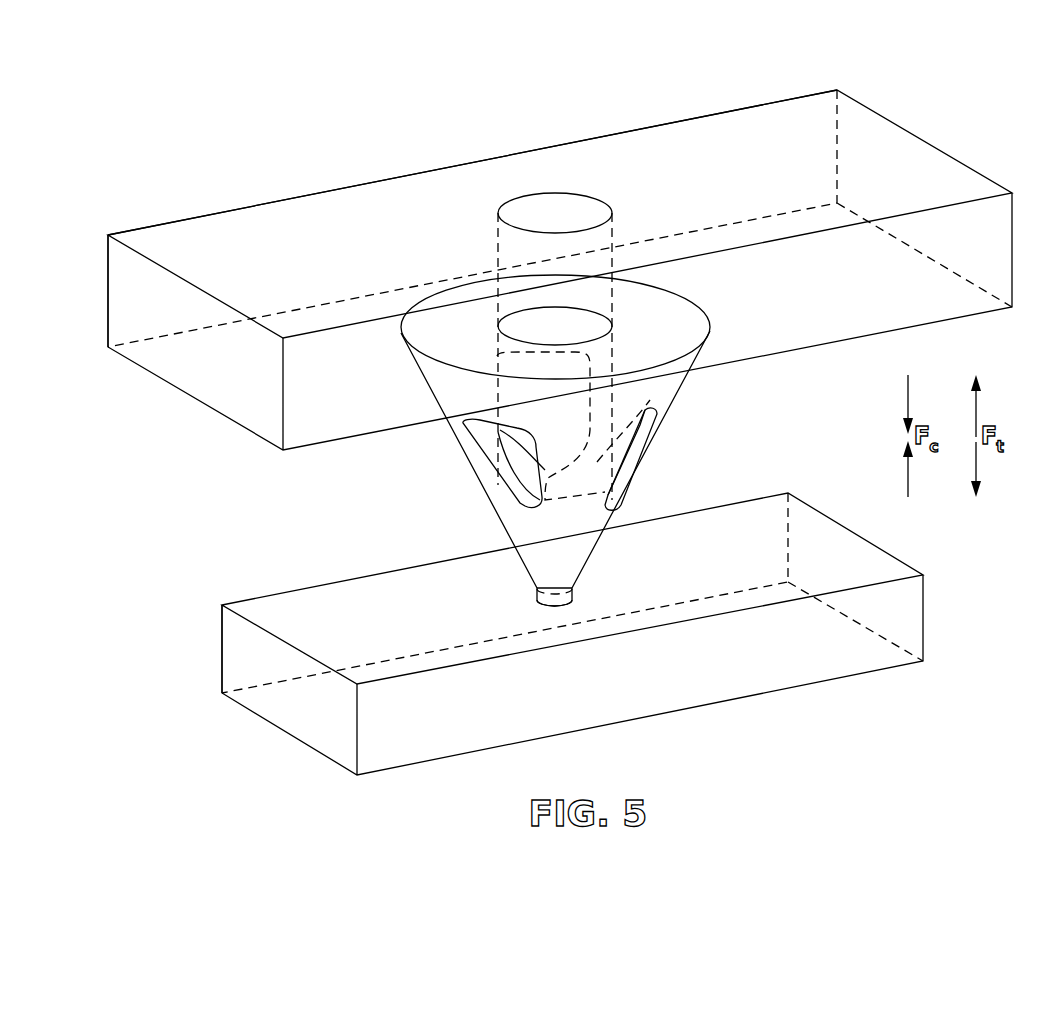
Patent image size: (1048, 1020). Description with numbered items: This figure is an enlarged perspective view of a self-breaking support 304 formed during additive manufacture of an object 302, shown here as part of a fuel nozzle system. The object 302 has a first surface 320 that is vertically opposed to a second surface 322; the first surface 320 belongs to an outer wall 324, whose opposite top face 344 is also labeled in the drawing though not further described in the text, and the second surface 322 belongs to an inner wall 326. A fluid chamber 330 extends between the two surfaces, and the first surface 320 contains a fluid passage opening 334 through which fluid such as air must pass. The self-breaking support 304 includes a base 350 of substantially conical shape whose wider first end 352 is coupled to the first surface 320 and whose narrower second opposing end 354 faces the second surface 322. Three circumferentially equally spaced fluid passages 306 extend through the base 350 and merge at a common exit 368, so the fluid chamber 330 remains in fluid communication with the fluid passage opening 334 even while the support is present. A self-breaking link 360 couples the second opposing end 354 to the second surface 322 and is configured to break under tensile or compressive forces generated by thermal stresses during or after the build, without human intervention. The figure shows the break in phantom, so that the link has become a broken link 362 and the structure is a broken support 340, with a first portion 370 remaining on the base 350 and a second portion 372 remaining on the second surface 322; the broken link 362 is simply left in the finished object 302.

The object 302 is at (122, 383).
The self-breaking support 304 is at (605, 489).
The fluid passage 306 is at (512, 453).
The first surface 320 is at (233, 422).
The second surface 322 is at (272, 621).
The outer wall 324 is at (122, 275).
The inner wall 326 is at (243, 660).
The fluid chamber 330 is at (269, 528).
The fluid passage opening 334 is at (530, 213).
The broken support 340 is at (605, 489).
The outer surface 344 is at (330, 208).
The base 350 is at (620, 507).
The first end 352 is at (672, 368).
The second opposing end 354 is at (600, 540).
The self-breaking link 360 is at (461, 613).
The broken link 362 is at (524, 608).
The common exit 368 is at (583, 322).
The first portion 370 is at (550, 565).
The second portion 372 is at (550, 606).